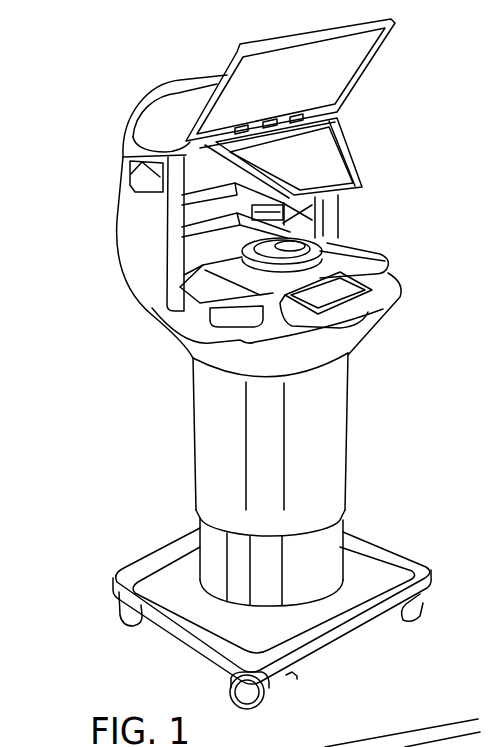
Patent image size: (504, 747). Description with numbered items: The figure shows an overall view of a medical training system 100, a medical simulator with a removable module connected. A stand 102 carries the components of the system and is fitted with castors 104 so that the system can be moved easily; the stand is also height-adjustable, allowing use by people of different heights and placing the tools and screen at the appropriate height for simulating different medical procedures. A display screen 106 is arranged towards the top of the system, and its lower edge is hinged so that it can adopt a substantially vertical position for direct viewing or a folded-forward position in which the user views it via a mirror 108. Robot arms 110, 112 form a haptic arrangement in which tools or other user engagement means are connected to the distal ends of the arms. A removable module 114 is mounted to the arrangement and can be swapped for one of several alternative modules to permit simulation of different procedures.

The medical training system 100 is at (108, 84).
The stand 102 is at (350, 423).
The castors 104 is at (232, 690).
The display screen 106 is at (374, 60).
The mirror 108 is at (362, 182).
The robot arm 110 is at (315, 221).
The robot arm 112 is at (237, 228).
The removable module 114 is at (388, 268).